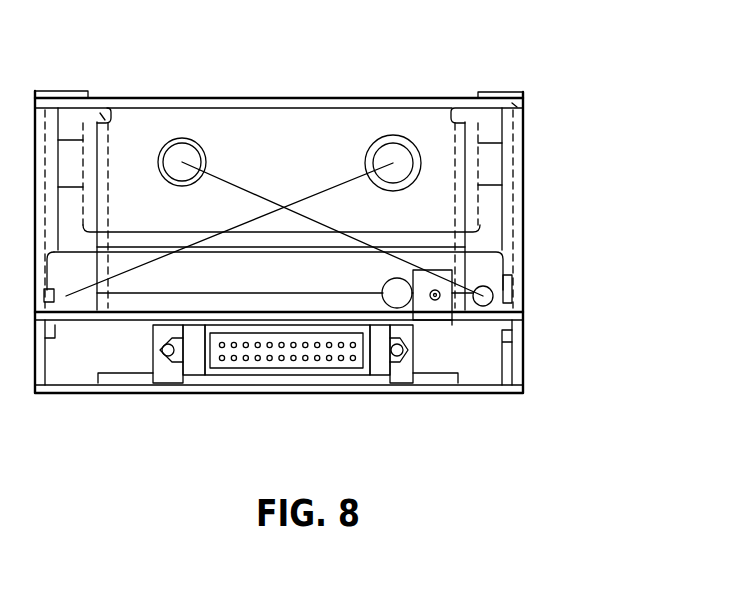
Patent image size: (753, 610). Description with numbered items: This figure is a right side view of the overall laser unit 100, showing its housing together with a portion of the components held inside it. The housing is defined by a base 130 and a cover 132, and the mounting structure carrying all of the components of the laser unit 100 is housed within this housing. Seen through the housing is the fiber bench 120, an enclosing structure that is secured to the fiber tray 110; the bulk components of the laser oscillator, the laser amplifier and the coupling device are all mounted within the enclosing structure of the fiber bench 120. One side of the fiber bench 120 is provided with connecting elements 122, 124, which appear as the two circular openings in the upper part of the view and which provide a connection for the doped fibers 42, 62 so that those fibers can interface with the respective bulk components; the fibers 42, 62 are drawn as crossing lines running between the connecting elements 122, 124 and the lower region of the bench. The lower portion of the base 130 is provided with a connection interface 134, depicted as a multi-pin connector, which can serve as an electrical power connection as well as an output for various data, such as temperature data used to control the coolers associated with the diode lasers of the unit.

The laser unit 100 is at (522, 60).
The cover 132 is at (98, 93).
The connecting element 124 is at (204, 150).
The connecting element 122 is at (381, 135).
The doped fiber 62 is at (262, 193).
The doped fiber 42 is at (328, 230).
The fiber bench 120 is at (498, 220).
The fiber tray 110 is at (512, 267).
The base 130 is at (523, 348).
The connection interface 134 is at (377, 360).